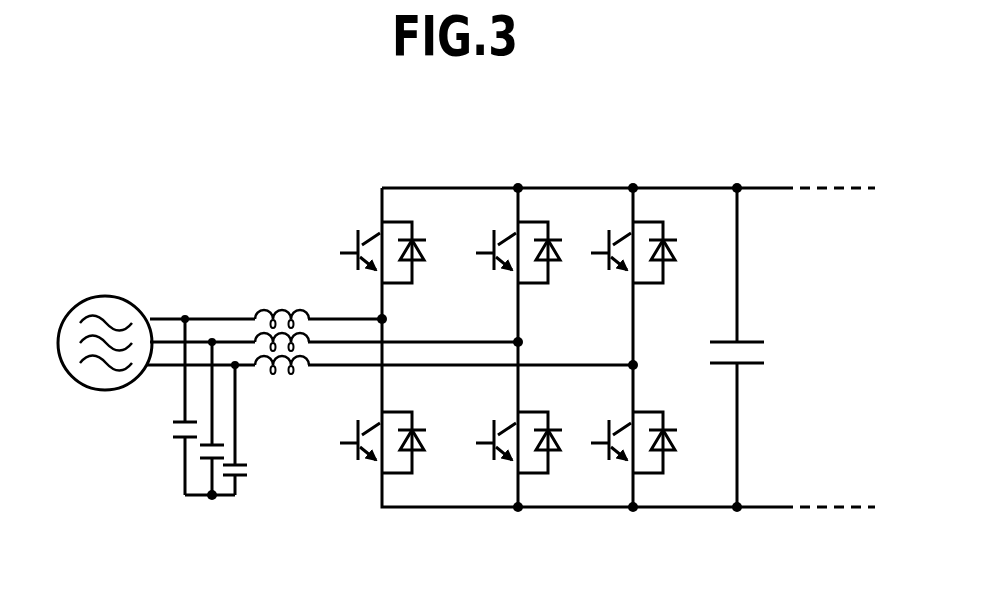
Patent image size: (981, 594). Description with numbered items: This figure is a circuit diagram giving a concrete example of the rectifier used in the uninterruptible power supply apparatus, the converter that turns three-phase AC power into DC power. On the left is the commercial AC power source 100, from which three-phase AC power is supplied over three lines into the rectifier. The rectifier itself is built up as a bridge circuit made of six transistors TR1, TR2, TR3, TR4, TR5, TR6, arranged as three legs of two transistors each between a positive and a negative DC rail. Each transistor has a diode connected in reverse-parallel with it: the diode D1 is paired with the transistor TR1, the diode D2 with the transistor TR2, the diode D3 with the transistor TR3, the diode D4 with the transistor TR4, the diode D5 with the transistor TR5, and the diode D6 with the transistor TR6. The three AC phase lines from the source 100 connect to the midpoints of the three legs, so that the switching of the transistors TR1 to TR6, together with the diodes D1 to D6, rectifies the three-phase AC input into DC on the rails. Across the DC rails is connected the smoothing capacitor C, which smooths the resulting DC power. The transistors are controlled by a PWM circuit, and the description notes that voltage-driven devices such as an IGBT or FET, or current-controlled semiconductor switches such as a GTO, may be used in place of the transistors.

The commercial AC power source 100 is at (112, 297).
The transistor TR1 is at (357, 250).
The transistor TR2 is at (357, 443).
The transistor TR3 is at (493, 250).
The transistor TR4 is at (493, 443).
The transistor TR5 is at (608, 250).
The transistor TR6 is at (607, 443).
The diode D1 is at (428, 258).
The diode D2 is at (428, 443).
The diode D3 is at (564, 258).
The diode D4 is at (562, 443).
The diode D5 is at (679, 258).
The diode D6 is at (678, 443).
The smoothing capacitor C is at (768, 350).